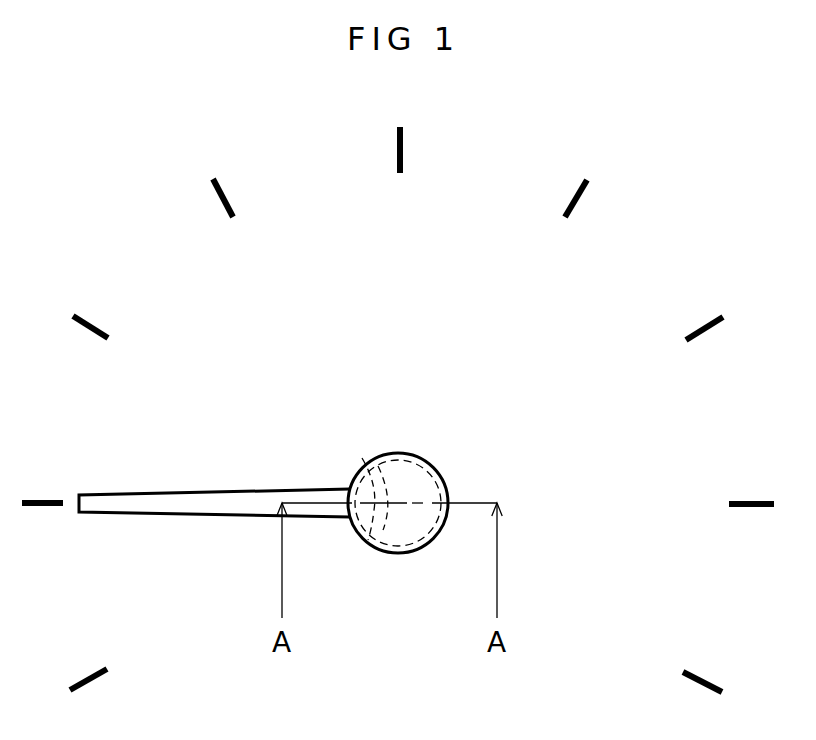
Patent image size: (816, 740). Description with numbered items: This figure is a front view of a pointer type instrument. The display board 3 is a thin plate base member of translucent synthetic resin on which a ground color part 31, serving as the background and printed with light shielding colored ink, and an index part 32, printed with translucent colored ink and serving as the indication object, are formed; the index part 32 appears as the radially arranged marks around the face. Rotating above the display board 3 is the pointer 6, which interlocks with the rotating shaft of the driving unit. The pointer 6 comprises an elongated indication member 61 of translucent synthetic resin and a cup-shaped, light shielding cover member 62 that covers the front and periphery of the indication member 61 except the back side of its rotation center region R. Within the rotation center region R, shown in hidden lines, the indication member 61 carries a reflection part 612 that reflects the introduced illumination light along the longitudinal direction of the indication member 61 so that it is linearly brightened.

The display board 3 is at (681, 557).
The ground color part 31 is at (585, 602).
The index part 32 is at (233, 217).
The pointer 6 is at (288, 453).
The indication member 61 is at (247, 500).
The cover member 62 is at (432, 468).
The reflection part 612 is at (357, 465).
The rotation center region R is at (415, 442).